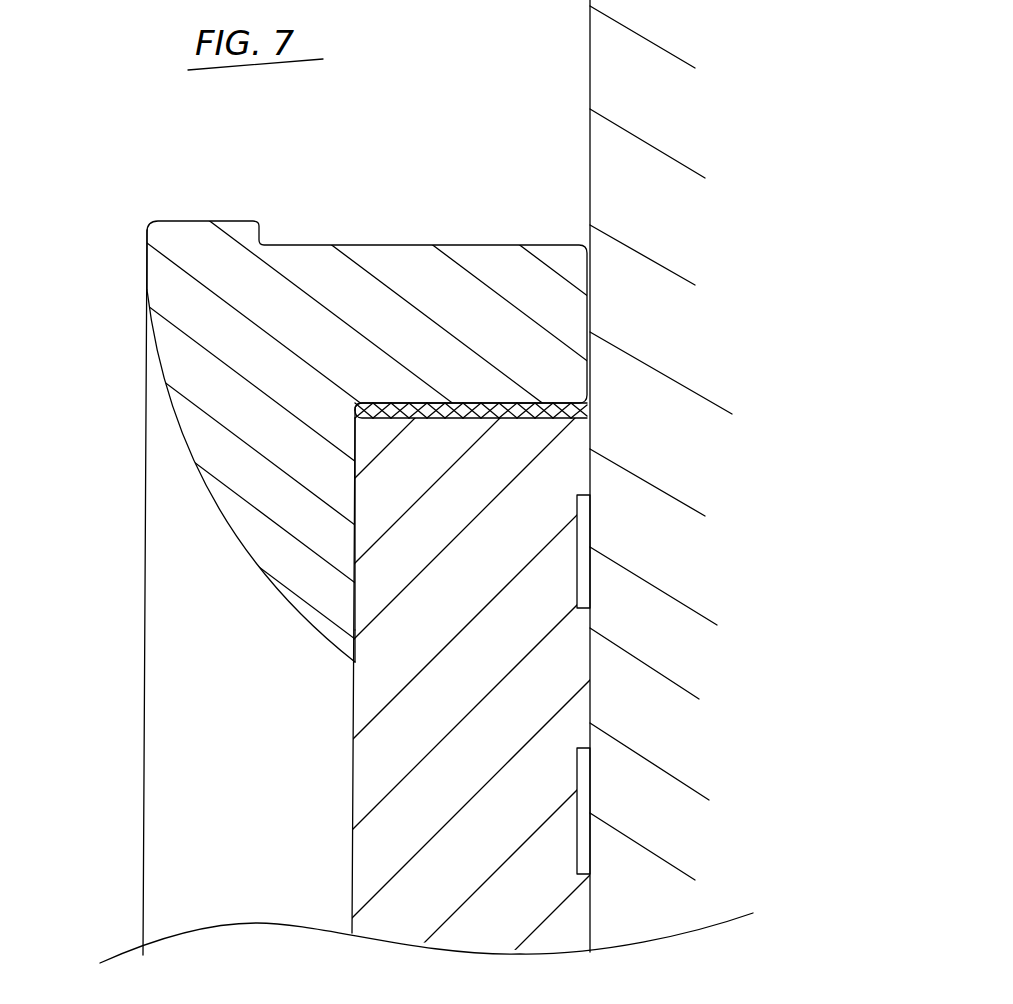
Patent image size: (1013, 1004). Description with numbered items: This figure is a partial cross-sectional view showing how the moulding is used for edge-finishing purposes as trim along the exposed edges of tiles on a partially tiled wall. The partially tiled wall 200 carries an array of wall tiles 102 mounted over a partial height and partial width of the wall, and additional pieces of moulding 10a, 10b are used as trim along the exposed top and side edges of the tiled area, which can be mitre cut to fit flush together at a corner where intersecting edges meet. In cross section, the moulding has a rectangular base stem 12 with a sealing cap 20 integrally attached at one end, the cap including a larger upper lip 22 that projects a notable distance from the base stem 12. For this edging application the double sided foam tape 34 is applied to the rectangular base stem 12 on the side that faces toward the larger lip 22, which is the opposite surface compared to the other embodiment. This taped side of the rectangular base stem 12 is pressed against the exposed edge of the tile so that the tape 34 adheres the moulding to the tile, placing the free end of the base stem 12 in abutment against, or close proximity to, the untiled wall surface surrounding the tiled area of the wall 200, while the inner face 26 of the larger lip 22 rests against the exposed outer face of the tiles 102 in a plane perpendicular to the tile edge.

The moulding 10a is at (358, 244).
The moulding 10b is at (142, 566).
The rectangular base stem 12 is at (497, 277).
The sealing cap 20 is at (237, 550).
The larger upper lip 22 is at (338, 625).
The inner face 26 is at (357, 593).
The double sided foam tape 34 is at (437, 410).
The wall tiles 102 is at (360, 780).
The wall 200 is at (588, 127).